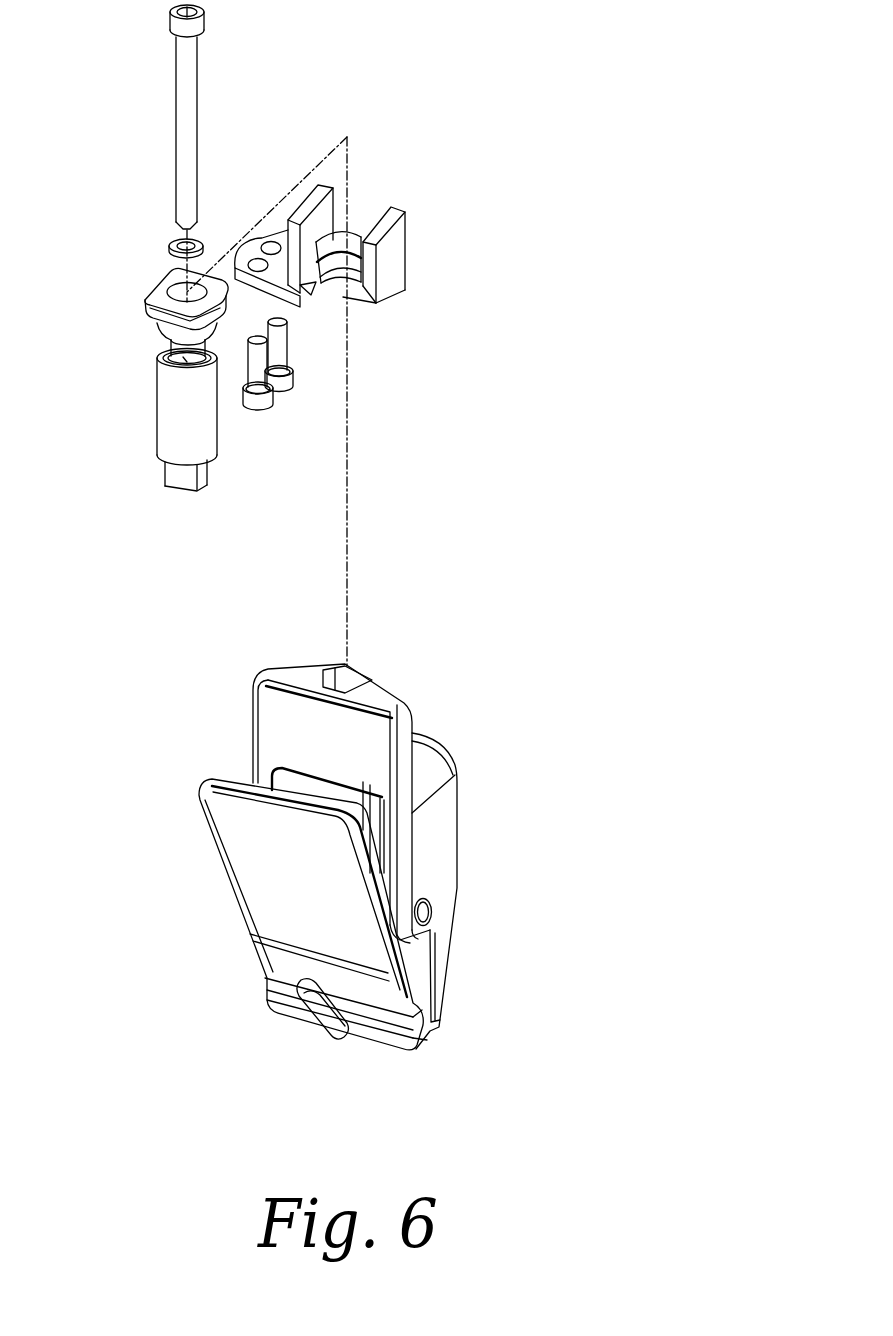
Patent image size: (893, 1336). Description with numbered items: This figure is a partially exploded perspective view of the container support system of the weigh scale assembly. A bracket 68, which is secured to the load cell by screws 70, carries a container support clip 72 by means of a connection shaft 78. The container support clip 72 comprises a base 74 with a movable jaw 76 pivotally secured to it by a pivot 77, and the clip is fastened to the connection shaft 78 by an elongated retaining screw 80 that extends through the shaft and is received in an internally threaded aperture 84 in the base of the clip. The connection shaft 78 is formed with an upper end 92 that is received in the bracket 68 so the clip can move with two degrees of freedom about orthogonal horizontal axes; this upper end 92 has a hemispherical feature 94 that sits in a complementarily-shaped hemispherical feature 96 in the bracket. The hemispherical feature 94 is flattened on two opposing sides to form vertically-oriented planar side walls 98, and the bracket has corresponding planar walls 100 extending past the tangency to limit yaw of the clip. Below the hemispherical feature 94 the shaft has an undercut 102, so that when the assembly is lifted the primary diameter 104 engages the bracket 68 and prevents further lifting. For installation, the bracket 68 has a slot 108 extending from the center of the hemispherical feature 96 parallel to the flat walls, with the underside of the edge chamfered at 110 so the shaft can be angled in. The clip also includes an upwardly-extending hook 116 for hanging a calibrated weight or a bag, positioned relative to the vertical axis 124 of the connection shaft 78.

The bracket 68 is at (364, 230).
The screws 70 is at (308, 393).
The container support clip 72 is at (354, 888).
The base 74 is at (447, 803).
The movable jaw 76 is at (245, 847).
The pivot 77 is at (431, 912).
The connection shaft 78 is at (172, 248).
The elongated retaining screw 80 is at (182, 84).
The internally threaded aperture 84 is at (356, 677).
The upper end 92 is at (156, 339).
The hemispherical feature 94 is at (170, 328).
The hemispherical feature 96 is at (336, 244).
The planar side walls 98 is at (168, 278).
The planar walls 100 is at (307, 215).
The undercut 102 is at (183, 357).
The primary diameter 104 is at (165, 437).
The slot 108 is at (336, 289).
The chamfer 110 is at (378, 309).
The hook 116 is at (324, 1030).
The vertical axis 124 is at (349, 466).